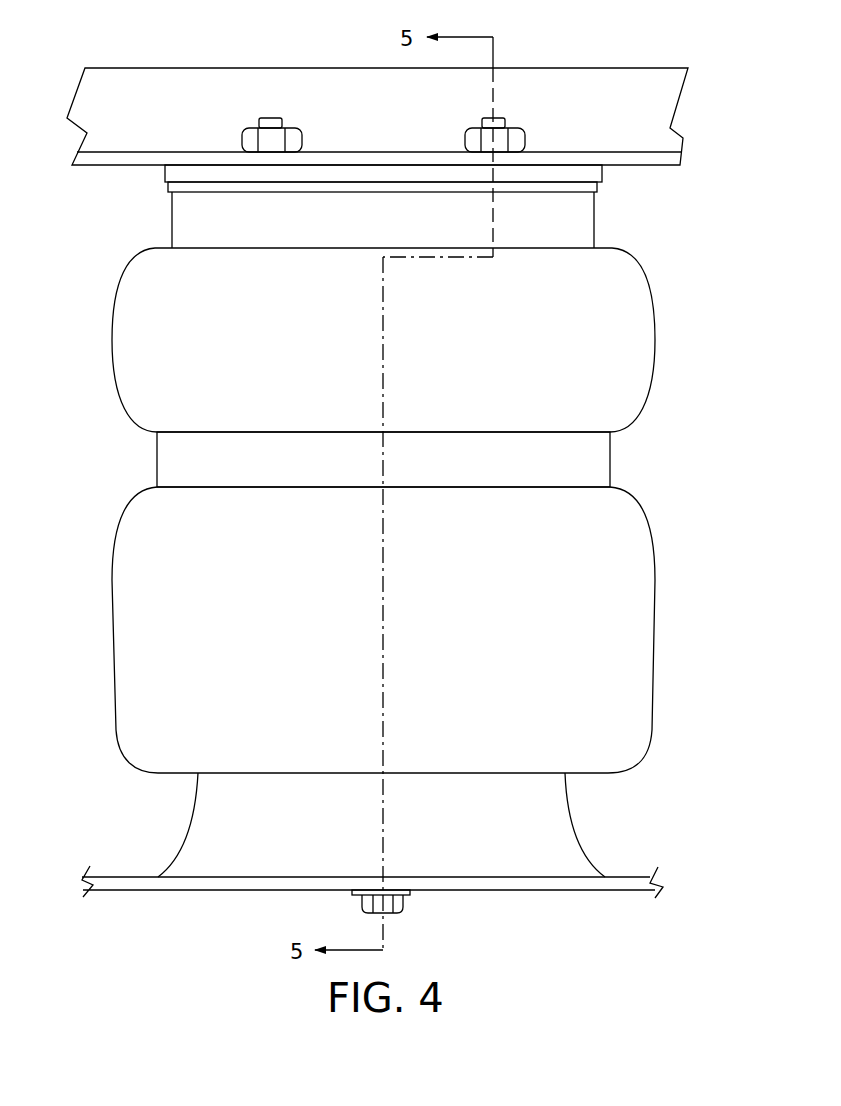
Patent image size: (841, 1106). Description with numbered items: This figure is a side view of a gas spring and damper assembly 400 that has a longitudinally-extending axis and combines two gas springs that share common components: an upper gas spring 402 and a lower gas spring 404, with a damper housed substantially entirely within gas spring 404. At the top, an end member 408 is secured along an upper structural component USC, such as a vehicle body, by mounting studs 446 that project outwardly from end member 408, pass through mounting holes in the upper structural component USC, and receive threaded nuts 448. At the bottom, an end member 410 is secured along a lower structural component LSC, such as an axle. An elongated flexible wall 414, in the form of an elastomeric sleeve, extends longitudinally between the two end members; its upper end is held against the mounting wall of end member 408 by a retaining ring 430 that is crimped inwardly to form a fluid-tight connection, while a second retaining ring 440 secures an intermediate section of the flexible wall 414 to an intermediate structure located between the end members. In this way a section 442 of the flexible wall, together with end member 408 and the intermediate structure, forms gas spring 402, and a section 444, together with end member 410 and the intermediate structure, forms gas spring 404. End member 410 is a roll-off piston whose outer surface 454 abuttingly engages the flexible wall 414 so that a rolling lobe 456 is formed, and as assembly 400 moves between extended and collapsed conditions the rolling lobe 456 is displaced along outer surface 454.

The gas spring and damper assembly 400 is at (660, 203).
The gas spring 402 is at (400, 340).
The gas spring 404 is at (399, 630).
The end member 408 is at (581, 177).
The end member 410 is at (590, 832).
The flexible wall 414 is at (399, 526).
The retaining ring 430 is at (180, 216).
The retaining ring 440 is at (178, 462).
The section of flexible wall 442 is at (131, 313).
The section of flexible wall 444 is at (126, 601).
The mounting studs 446 is at (270, 123).
The threaded nuts 448 is at (248, 138).
The outer surface 454 is at (182, 840).
The rolling lobe 456 is at (158, 774).
The upper structural component USC is at (136, 86).
The lower structural component LSC is at (127, 884).